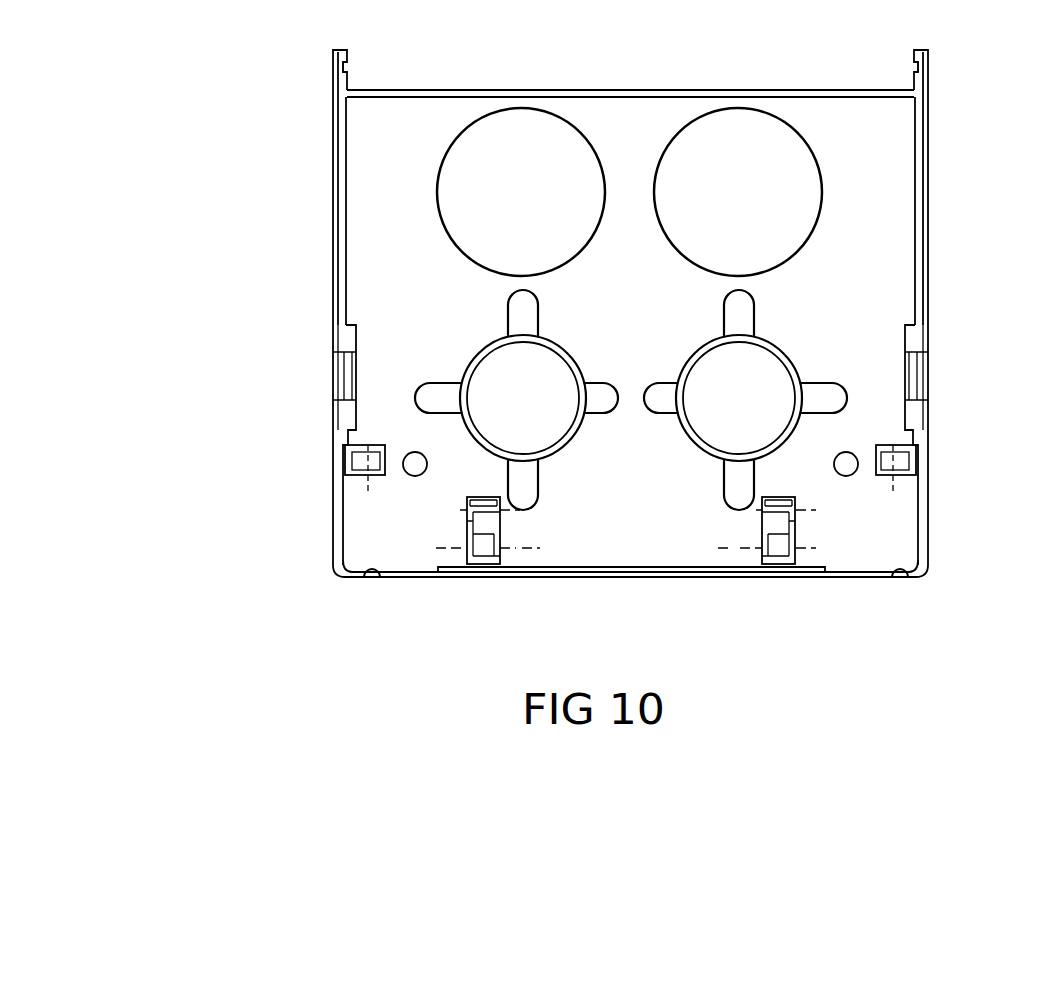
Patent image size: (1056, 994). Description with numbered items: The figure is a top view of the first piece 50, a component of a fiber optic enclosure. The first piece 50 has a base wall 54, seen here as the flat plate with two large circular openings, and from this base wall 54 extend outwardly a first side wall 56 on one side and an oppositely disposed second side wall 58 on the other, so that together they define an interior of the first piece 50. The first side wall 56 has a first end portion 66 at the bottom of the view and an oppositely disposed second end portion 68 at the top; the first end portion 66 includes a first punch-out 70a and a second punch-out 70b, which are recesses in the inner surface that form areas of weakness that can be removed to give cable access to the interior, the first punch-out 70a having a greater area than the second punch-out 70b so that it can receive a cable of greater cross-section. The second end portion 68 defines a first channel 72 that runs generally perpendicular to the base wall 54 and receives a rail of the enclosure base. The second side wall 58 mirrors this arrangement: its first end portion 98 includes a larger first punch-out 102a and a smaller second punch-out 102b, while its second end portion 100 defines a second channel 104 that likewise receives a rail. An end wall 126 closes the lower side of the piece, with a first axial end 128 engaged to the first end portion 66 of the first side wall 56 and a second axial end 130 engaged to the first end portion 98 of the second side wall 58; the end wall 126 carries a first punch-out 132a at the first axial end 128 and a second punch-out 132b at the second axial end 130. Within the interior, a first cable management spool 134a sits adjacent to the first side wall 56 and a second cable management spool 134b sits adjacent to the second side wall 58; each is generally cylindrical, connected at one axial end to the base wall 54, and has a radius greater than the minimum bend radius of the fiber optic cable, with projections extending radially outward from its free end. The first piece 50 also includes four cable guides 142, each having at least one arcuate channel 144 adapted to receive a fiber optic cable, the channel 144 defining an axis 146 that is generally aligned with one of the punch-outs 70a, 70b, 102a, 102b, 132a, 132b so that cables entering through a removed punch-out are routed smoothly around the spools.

The first piece 50 is at (226, 86).
The base wall 54 is at (880, 252).
The first side wall 56 is at (936, 297).
The second side wall 58 is at (331, 299).
The first end portion 66 is at (926, 522).
The second end portion 68 is at (930, 78).
The first punch-out 70a is at (917, 547).
The second punch-out 70b is at (917, 511).
The first channel 72 is at (914, 63).
The first end portion 98 is at (337, 525).
The second end portion 100 is at (332, 90).
The first punch-out 102a is at (342, 548).
The second punch-out 102b is at (342, 511).
The second channel 104 is at (347, 63).
The end wall 126 is at (624, 582).
The first axial end 128 is at (868, 579).
The second axial end 130 is at (400, 579).
The first punch-out 132a is at (908, 580).
The second punch-out 132b is at (372, 580).
The first cable management spool 134a is at (805, 368).
The second cable management spool 134b is at (579, 363).
The cable guide 142 is at (523, 528).
The channel 144 is at (467, 537).
The axis 146 is at (525, 547).